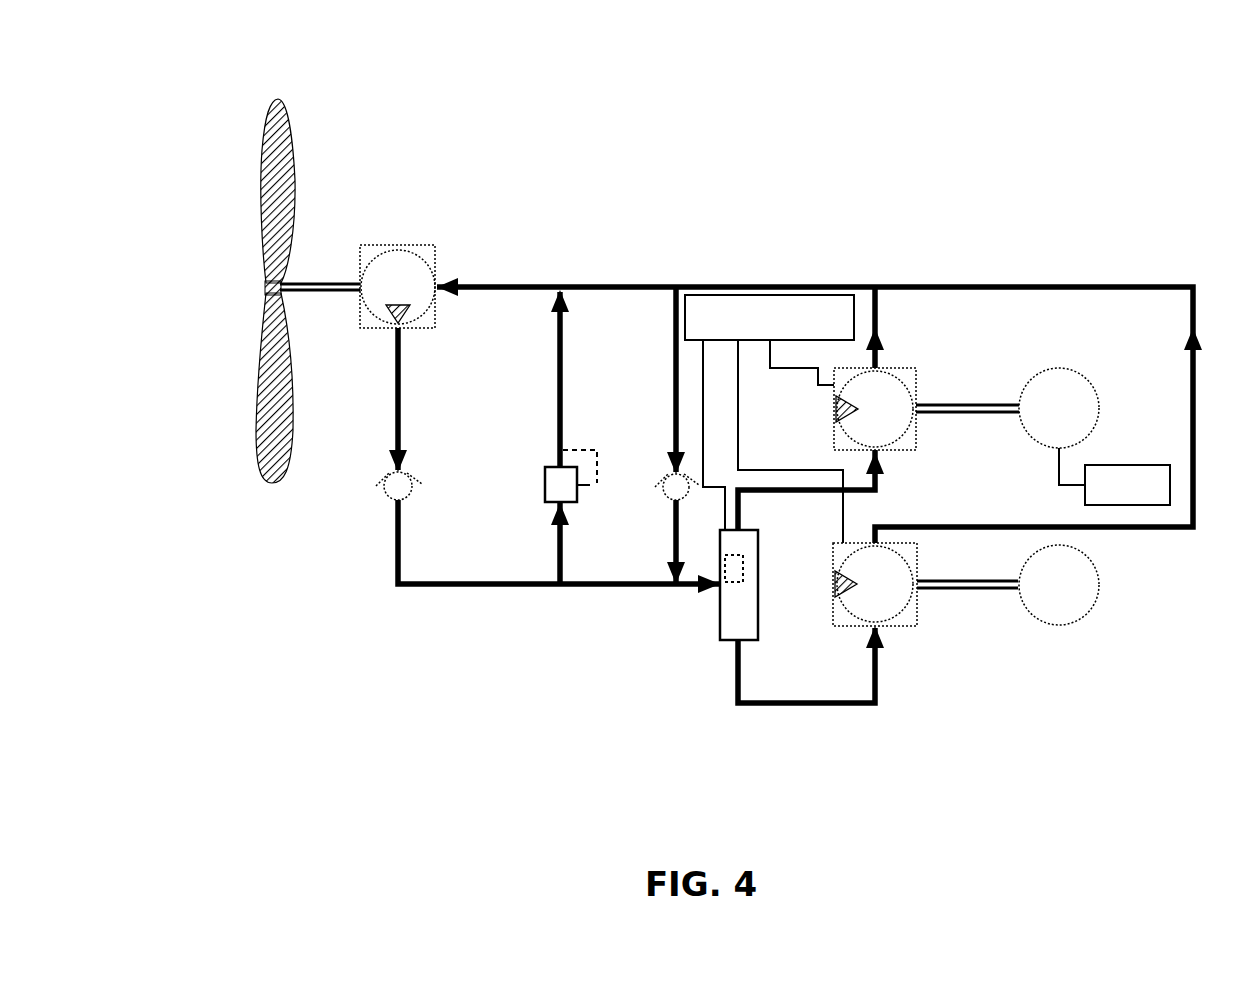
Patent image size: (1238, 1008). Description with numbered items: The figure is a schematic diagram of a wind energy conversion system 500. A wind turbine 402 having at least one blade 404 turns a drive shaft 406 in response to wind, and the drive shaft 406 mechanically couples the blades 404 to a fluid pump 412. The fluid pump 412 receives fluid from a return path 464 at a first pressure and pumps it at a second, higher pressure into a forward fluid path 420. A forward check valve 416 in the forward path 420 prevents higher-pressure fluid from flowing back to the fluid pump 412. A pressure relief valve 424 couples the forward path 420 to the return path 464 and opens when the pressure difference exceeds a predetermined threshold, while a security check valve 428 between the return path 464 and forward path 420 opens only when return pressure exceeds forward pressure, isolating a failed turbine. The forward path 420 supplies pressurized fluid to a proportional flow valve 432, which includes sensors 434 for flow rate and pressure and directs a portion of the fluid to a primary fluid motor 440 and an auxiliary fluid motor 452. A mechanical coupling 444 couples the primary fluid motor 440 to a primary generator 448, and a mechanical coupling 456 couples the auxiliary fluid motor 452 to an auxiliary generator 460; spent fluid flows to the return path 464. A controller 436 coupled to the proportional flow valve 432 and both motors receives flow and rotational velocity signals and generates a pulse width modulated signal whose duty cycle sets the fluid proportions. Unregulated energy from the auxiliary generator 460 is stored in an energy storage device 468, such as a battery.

The wind turbine 402 is at (240, 298).
The blade 404 is at (270, 100).
The drive shaft 406 is at (300, 282).
The fluid pump 412 is at (385, 248).
The forward check valve 416 is at (388, 496).
The forward fluid path 420 is at (492, 588).
The pressure relief valve 424 is at (560, 465).
The security check valve 428 is at (672, 470).
The proportional flow valve 432 is at (720, 606).
The sensors 434 is at (733, 583).
The controller 436 is at (745, 295).
The primary fluid motor 440 is at (900, 628).
The mechanical coupling 444 is at (945, 595).
The primary generator 448 is at (1080, 618).
The auxiliary fluid motor 452 is at (895, 370).
The mechanical coupling 456 is at (940, 400).
The auxiliary generator 460 is at (1050, 368).
The return path 464 is at (655, 286).
The energy storage device 468 is at (1114, 477).
The wind energy conversion system 500 is at (298, 735).